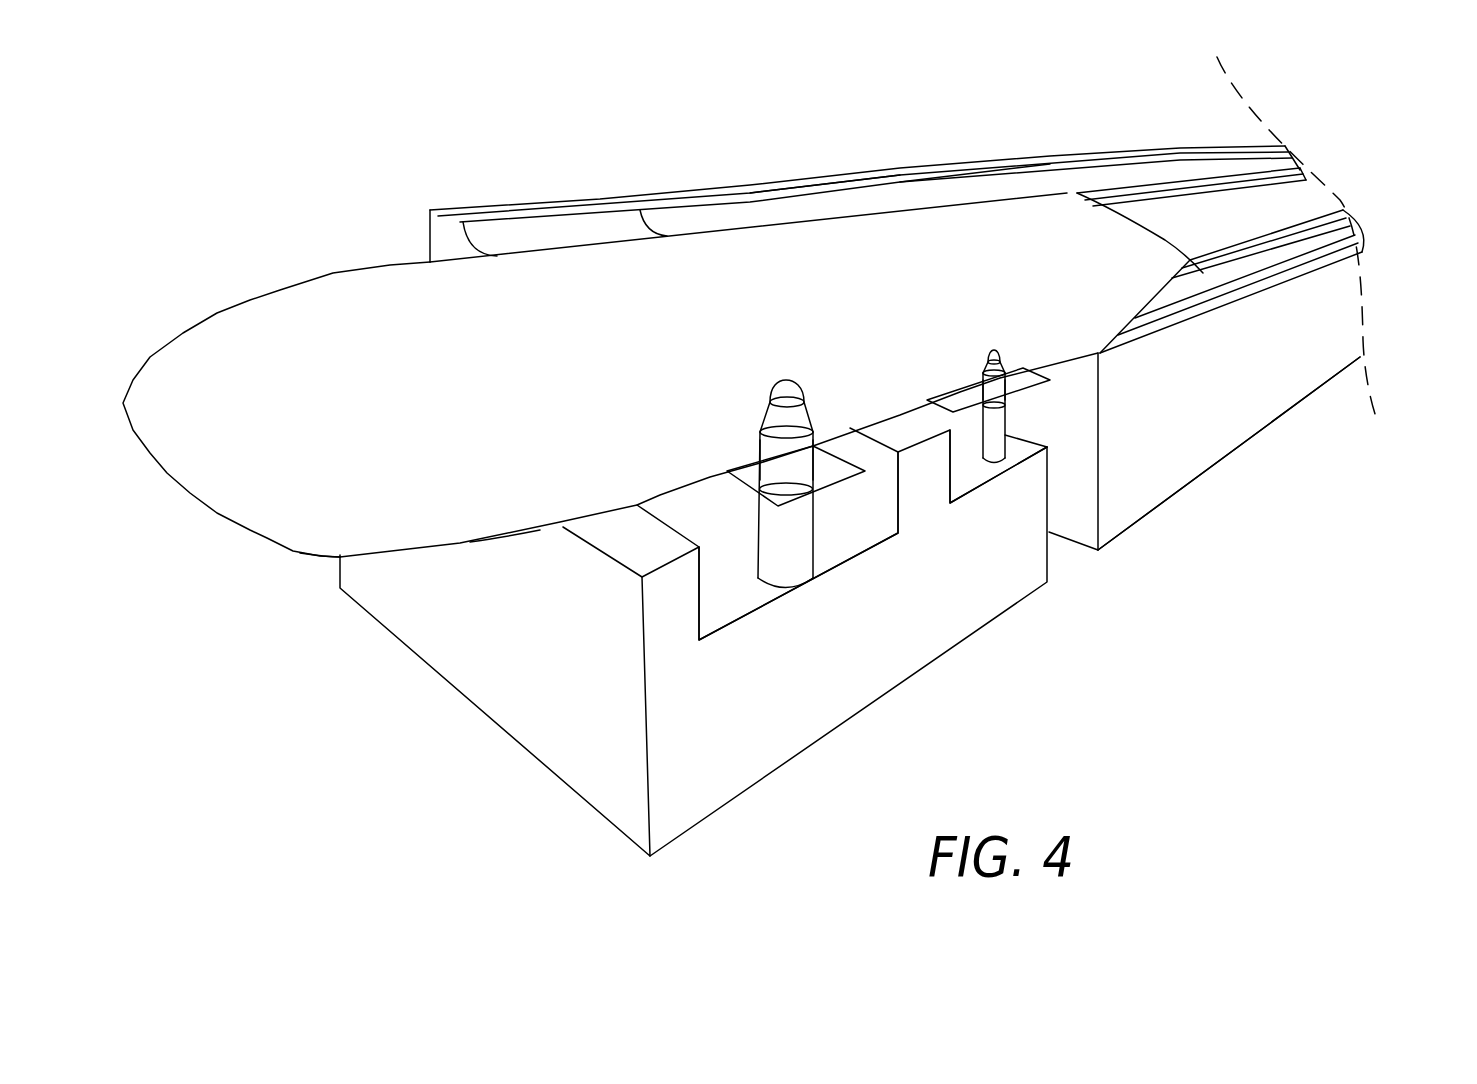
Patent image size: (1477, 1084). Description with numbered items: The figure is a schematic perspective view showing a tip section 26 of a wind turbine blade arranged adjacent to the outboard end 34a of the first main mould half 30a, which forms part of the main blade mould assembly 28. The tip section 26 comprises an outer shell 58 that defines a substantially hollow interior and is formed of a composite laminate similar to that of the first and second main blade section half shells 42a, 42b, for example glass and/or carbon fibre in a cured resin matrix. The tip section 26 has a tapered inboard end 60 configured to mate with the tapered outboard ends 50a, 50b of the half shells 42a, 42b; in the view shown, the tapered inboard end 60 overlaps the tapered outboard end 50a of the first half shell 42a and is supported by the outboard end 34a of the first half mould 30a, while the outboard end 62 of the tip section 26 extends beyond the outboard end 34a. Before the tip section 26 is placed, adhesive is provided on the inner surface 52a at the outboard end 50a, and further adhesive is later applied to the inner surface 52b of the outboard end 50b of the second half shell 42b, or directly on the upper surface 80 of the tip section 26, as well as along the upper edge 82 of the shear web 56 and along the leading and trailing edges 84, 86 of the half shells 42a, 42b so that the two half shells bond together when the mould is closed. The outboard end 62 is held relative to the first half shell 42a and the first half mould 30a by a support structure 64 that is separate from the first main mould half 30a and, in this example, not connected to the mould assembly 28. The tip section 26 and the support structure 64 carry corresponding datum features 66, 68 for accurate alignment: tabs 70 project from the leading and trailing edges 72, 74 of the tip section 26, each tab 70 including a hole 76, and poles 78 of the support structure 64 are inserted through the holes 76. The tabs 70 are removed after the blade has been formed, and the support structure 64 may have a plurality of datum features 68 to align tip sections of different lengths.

The tip section 26 is at (652, 431).
The main blade mould assembly 28 is at (910, 158).
The first main mould half 30a is at (1115, 527).
The outboard end of the first main mould half 34a is at (1105, 487).
The first main blade section half shell 42a is at (1253, 285).
The second main blade section half shell 42b is at (845, 183).
The tapered outboard end of the first half shell 50a is at (1197, 304).
The tapered outboard end of the second half shell 50b is at (527, 190).
The inner surface of the first half shell 52a is at (1280, 298).
The inner surface of the second half shell 52b is at (592, 225).
The shear web 56 is at (1300, 193).
The outer shell 58 is at (372, 497).
The tapered inboard end 60 is at (990, 187).
The outboard end of the tip section 62 is at (378, 258).
The support structure 64 is at (878, 680).
The datum features of the tip section 66 is at (727, 465).
The datum features of the support structure 68 is at (812, 394).
The tabs 70 is at (833, 473).
The leading edge of the tip section 72 is at (500, 538).
The trailing edge of the tip section 74 is at (228, 303).
The hole 76 is at (776, 510).
The poles 78 is at (758, 450).
The upper surface of the tip section 80 is at (1075, 278).
The upper edge of the shear web 82 is at (1183, 180).
The leading edge of the main half shells 84 is at (1318, 258).
The trailing edge of the main half shells 86 is at (1107, 180).